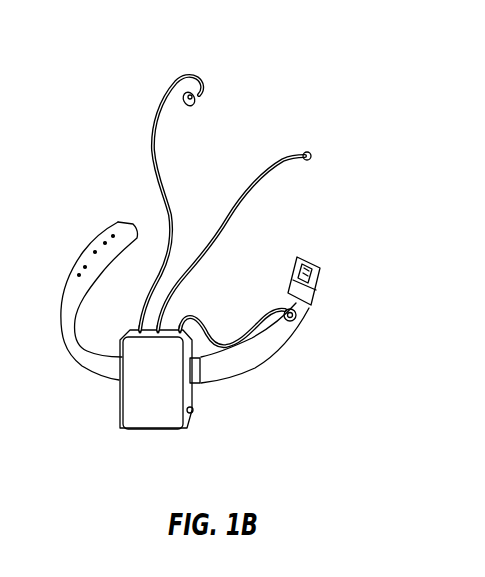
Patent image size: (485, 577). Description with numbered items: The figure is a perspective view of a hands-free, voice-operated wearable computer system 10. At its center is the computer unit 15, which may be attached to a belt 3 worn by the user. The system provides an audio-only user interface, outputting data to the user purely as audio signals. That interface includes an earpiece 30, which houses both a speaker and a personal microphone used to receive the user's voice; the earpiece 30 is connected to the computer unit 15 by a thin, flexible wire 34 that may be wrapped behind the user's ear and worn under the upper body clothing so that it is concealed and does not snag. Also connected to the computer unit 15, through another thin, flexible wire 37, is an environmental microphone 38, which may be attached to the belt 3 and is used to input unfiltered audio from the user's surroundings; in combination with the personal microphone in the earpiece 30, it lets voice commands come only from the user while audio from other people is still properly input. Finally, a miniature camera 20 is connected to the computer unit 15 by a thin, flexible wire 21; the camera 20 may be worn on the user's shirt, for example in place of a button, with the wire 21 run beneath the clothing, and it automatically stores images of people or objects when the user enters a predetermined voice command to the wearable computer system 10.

The wearable computer system 10 is at (252, 42).
The belt 3 is at (262, 353).
The computer unit 15 is at (128, 418).
The wire 34 is at (152, 163).
The earpiece 30 is at (200, 103).
The wire 21 is at (250, 178).
The miniature camera 20 is at (310, 155).
The wire 37 is at (208, 333).
The environmental microphone 38 is at (296, 322).